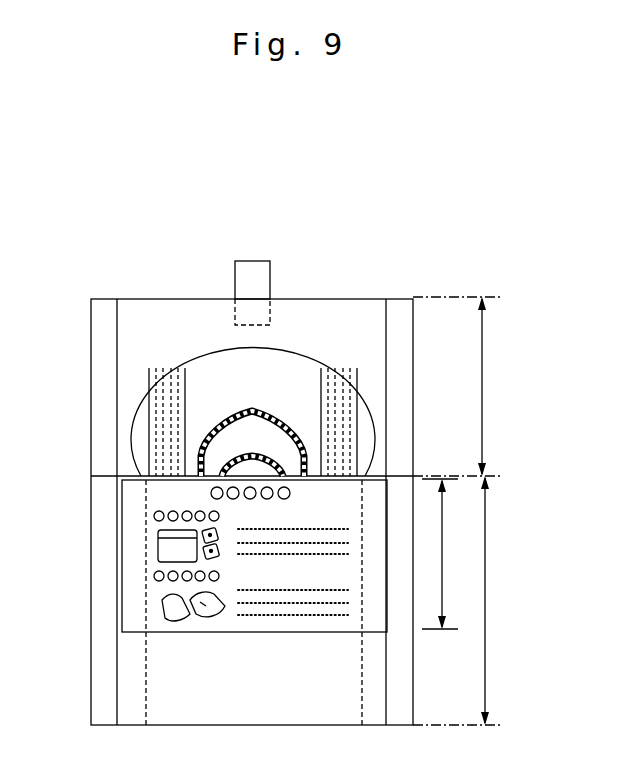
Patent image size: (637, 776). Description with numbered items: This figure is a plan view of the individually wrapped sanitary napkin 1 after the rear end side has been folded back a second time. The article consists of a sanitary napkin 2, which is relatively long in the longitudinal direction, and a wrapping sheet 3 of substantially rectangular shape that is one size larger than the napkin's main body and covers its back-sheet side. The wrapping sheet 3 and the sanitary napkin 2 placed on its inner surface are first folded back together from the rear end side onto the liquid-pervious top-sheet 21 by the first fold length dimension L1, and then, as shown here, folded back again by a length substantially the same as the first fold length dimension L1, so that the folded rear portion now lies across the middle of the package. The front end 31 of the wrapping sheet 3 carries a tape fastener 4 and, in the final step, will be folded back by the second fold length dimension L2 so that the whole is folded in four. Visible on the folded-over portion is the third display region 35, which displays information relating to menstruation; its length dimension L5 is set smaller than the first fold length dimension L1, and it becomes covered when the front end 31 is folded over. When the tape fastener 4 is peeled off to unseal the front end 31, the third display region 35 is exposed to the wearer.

The individually wrapped sanitary napkin 1 is at (78, 266).
The sanitary napkin 2 is at (192, 390).
The wrapping sheet 3 is at (358, 325).
The tape fastener 4 is at (243, 272).
The top-sheet 21 is at (300, 360).
The front end 31 is at (105, 308).
The third display region 35 is at (132, 553).
The first fold length dimension L1 is at (464, 600).
The second fold length dimension L2 is at (463, 386).
The length dimension of the third display region L5 is at (449, 554).